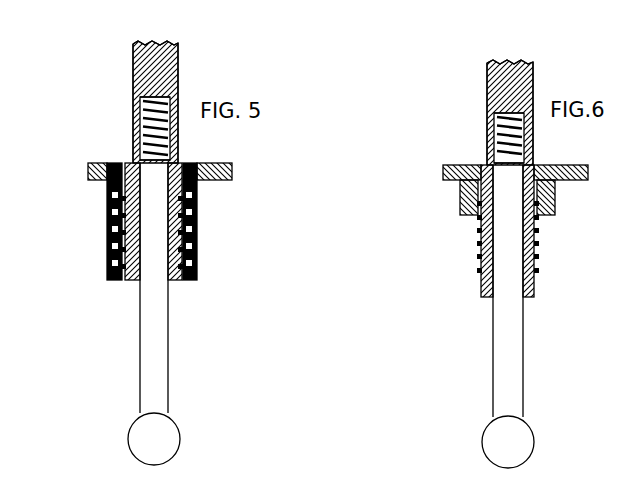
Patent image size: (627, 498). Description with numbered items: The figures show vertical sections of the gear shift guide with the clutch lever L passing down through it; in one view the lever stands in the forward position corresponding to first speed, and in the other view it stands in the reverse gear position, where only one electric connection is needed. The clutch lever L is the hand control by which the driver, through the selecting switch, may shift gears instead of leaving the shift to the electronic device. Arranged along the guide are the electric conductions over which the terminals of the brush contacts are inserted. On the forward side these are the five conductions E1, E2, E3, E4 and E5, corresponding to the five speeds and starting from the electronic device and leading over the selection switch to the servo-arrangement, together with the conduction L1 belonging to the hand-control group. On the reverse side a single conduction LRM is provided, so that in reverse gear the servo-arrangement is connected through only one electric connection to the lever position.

In FIG. 5, the clutch lever L is at (156, 73).
In FIG. 6, the clutch lever L is at (527, 85).
In FIG. 5, the conduction L1 is at (107, 192).
In FIG. 5, the conduction E1 is at (107, 202).
In FIG. 5, the conduction E2 is at (107, 217).
In FIG. 5, the conduction E3 is at (107, 235).
In FIG. 5, the conduction E4 is at (107, 249).
In FIG. 5, the conduction E5 is at (107, 268).
In FIG. 6, the conduction LRM is at (472, 213).